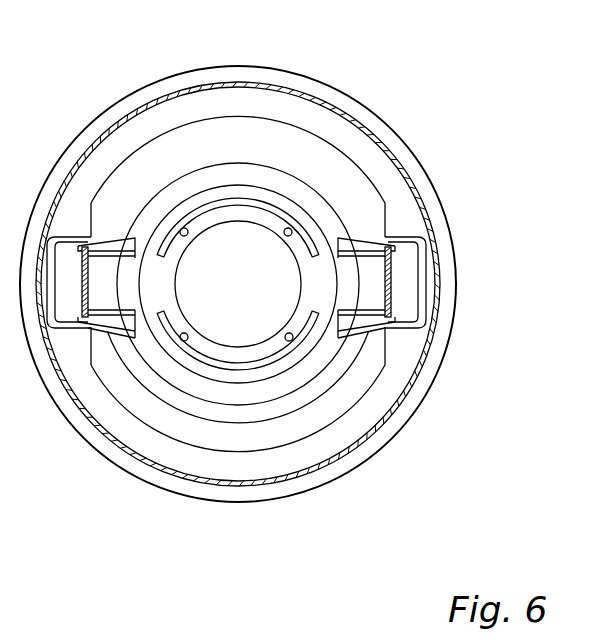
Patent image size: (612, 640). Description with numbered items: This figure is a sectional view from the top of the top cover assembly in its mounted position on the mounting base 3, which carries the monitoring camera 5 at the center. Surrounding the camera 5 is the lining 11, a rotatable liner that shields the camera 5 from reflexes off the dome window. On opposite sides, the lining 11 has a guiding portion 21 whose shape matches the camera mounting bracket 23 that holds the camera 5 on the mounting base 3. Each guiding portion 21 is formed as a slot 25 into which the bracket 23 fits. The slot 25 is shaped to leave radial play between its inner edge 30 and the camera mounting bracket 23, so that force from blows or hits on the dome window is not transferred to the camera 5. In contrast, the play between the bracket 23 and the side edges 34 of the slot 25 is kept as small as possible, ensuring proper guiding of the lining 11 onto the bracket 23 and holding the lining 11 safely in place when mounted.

The mounting base 3 is at (388, 119).
The monitoring camera 5 is at (257, 220).
The lining 11 is at (393, 215).
The guiding portion 21 is at (408, 270).
The camera mounting bracket 23 is at (362, 322).
The slot 25 is at (412, 297).
The inner edge of the slot 30 is at (432, 233).
The side edges of the slot 34 is at (433, 327).